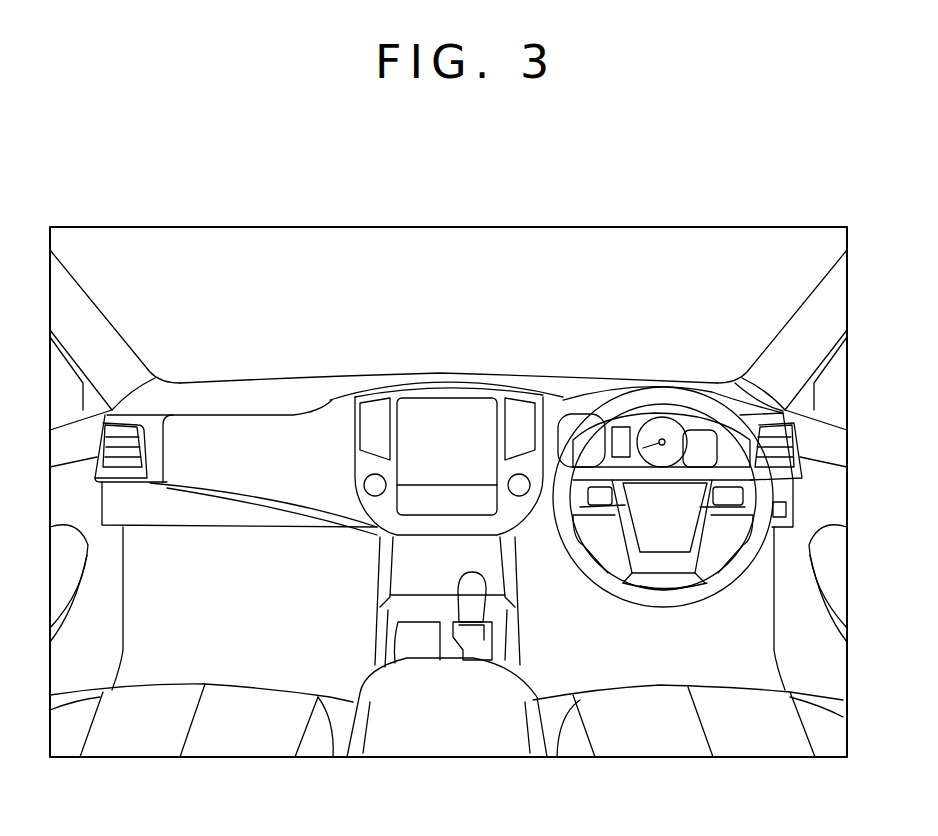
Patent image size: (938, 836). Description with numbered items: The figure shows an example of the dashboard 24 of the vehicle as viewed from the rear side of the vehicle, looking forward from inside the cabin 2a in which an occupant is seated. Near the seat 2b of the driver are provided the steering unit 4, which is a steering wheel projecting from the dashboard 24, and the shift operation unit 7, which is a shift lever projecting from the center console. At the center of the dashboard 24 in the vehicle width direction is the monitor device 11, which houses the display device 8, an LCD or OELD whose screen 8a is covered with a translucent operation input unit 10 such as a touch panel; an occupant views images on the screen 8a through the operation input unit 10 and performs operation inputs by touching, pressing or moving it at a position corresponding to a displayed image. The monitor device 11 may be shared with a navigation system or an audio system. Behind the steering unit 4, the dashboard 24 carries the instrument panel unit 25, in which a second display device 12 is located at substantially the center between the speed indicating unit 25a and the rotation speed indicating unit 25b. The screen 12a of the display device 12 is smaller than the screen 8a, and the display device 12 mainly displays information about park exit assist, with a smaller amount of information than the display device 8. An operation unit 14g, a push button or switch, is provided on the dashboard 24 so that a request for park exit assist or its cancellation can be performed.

The cabin 2a is at (253, 244).
The seat 2b is at (650, 747).
The steering unit 4 is at (688, 398).
The shift operation unit 7 is at (473, 612).
The display device 8 is at (483, 319).
The screen 8a is at (473, 417).
The operation input unit 10 is at (483, 319).
The monitor device 11 is at (450, 329).
The display device 12 is at (614, 291).
The screen 12a is at (622, 438).
The operation unit 14g is at (787, 510).
The dashboard 24 is at (343, 376).
The instrument panel unit 25 is at (664, 296).
The speed indicating unit 25a is at (570, 418).
The rotation speed indicating unit 25b is at (662, 428).